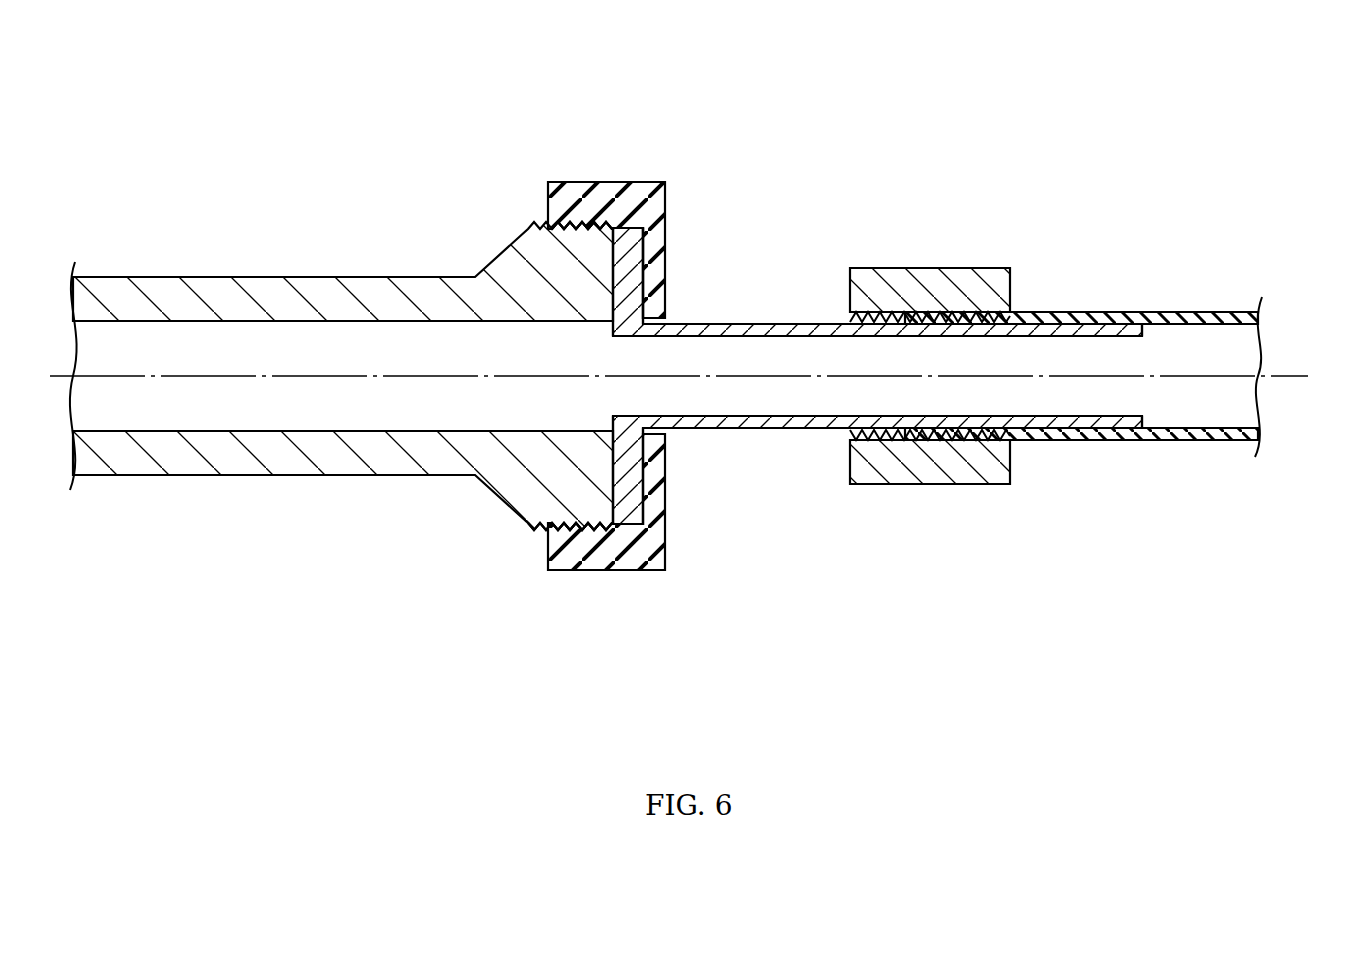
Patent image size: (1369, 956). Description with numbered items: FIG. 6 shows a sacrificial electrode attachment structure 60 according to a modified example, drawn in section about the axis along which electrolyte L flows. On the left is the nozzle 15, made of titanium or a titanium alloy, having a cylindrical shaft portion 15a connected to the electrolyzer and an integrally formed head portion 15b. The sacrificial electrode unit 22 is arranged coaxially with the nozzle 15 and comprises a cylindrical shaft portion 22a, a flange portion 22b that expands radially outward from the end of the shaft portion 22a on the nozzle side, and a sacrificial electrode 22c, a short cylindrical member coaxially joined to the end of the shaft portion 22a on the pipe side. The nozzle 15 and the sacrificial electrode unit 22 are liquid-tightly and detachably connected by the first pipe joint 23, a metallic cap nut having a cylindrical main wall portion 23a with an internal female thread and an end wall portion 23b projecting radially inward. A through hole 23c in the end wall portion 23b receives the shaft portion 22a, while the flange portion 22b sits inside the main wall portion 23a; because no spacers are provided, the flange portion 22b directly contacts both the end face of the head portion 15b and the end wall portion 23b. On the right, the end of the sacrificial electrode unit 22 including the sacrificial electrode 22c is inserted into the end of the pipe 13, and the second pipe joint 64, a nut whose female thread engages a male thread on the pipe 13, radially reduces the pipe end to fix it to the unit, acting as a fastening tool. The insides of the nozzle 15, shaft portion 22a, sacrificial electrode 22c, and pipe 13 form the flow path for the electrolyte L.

The sacrificial electrode attachment structure 60 is at (1188, 160).
The nozzle 15 is at (215, 277).
The shaft portion 15a is at (235, 475).
The head portion 15b is at (513, 515).
The first pipe joint 23 is at (618, 182).
The main wall portion 23a is at (547, 202).
The end wall portion 23b is at (665, 525).
The through hole 23c is at (652, 342).
The sacrificial electrode unit 22 is at (785, 323).
The shaft portion 22a is at (812, 428).
The flange portion 22b is at (624, 533).
The sacrificial electrode 22c is at (1082, 442).
The second pipe joint 64 is at (935, 485).
The pipe 13 is at (1120, 442).
The electrolyte L is at (1220, 360).